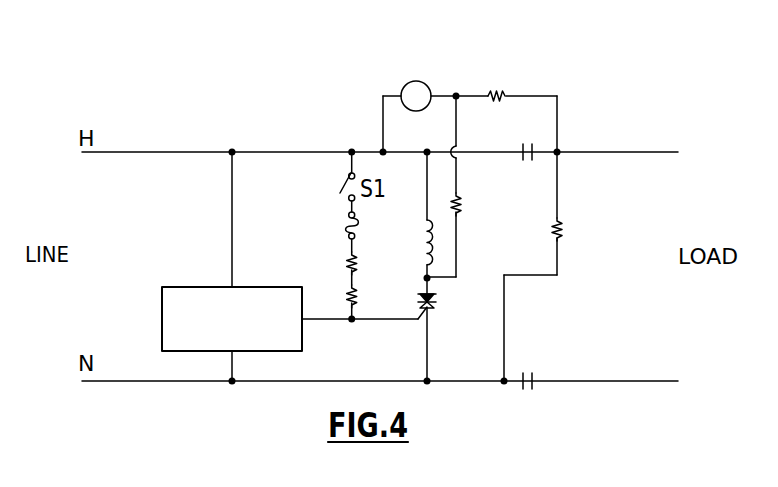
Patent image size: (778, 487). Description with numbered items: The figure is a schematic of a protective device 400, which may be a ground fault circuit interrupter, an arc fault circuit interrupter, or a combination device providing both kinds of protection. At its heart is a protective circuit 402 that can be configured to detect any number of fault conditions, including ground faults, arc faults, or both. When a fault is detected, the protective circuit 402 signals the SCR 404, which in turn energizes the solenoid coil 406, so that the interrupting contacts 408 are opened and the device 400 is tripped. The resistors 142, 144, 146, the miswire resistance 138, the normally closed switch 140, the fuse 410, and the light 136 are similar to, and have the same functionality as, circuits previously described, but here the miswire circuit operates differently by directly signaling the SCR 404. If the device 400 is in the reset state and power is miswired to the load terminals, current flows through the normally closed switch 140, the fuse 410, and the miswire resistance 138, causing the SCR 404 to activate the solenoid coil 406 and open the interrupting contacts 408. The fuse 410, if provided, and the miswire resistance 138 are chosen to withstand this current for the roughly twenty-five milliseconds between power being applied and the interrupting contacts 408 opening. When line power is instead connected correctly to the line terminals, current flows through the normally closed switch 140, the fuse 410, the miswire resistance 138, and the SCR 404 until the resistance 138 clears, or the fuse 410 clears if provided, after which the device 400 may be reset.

The protective device 400 is at (472, 70).
The light 136 is at (404, 85).
The resistor 144 is at (500, 93).
The interrupting contacts 408 is at (522, 146).
The normally closed switch 140 is at (340, 187).
The fuse 410 is at (349, 227).
The miswire resistance 138 is at (348, 262).
The protective circuit 402 is at (196, 287).
The solenoid coil 406 is at (424, 246).
The SCR 404 is at (436, 301).
The resistor 146 is at (463, 203).
The resistor 142 is at (563, 230).